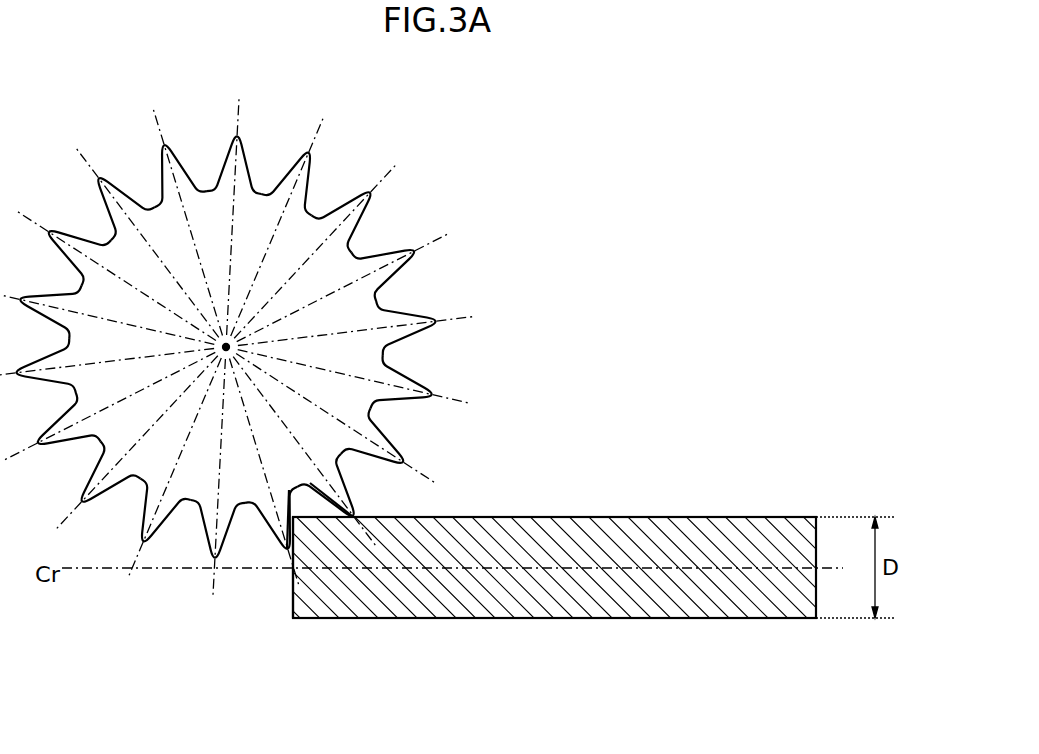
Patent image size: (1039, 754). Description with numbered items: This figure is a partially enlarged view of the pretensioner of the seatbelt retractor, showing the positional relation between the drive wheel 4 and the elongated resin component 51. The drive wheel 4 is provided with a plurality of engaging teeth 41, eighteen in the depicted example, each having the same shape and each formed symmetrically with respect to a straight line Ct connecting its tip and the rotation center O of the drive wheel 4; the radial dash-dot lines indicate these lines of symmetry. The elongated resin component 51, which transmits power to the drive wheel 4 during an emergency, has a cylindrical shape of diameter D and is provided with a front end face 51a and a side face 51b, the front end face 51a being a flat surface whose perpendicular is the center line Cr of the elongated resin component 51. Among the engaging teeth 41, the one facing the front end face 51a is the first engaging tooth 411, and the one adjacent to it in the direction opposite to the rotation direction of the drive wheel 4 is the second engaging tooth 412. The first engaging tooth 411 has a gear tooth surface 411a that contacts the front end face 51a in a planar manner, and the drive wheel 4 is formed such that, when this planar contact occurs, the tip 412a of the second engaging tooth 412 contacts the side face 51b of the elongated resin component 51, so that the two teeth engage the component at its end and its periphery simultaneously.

The drive wheel 4 is at (251, 352).
The engaging teeth 41 is at (305, 151).
The first engaging tooth 411 is at (263, 532).
The gear tooth surface 411a is at (294, 488).
The second engaging tooth 412 is at (400, 474).
The tip of the second engaging tooth 412a is at (358, 496).
The elongated resin component 51 is at (552, 568).
The front end face 51a is at (293, 597).
The side face 51b is at (565, 517).